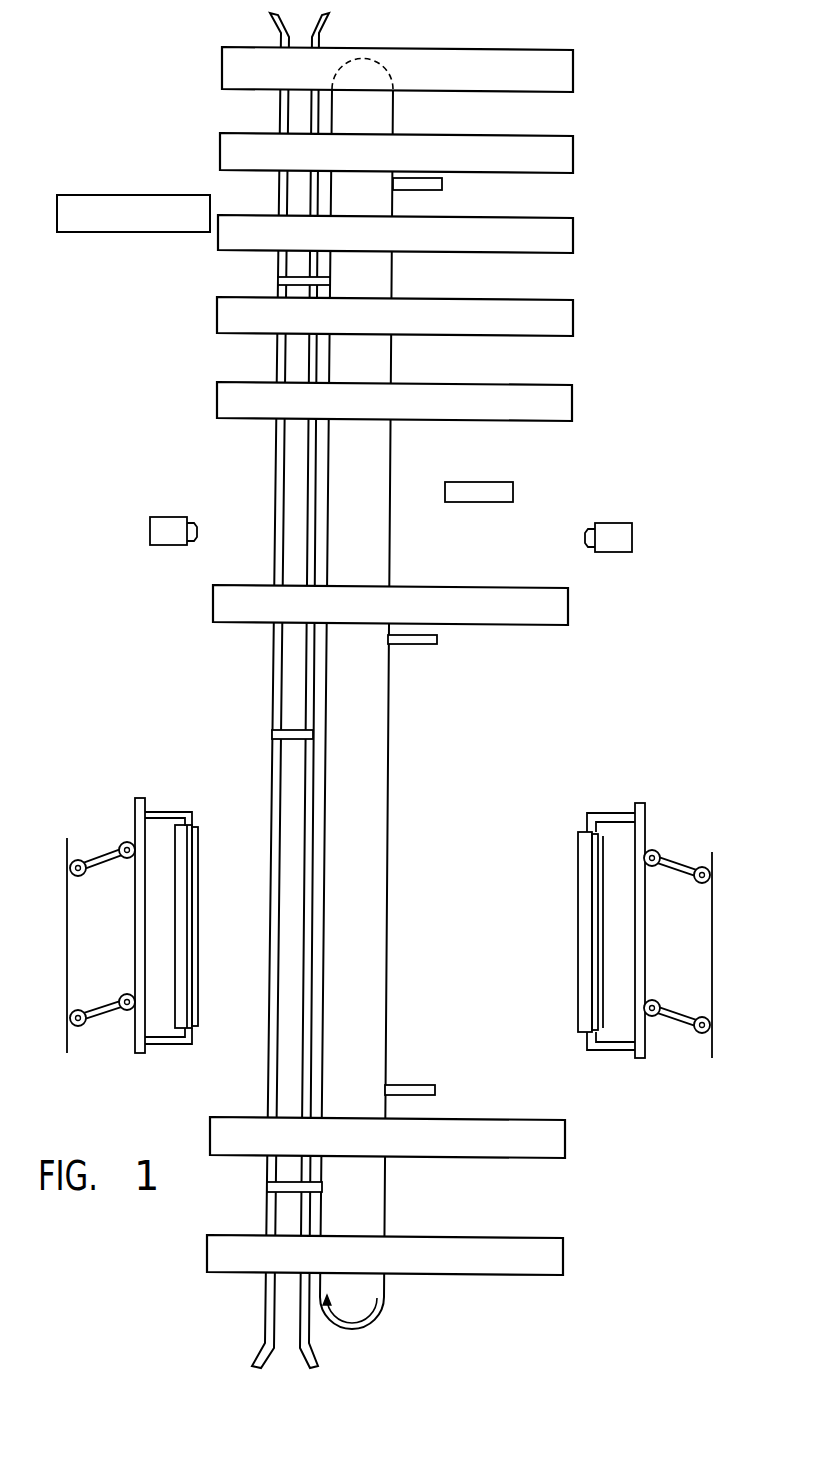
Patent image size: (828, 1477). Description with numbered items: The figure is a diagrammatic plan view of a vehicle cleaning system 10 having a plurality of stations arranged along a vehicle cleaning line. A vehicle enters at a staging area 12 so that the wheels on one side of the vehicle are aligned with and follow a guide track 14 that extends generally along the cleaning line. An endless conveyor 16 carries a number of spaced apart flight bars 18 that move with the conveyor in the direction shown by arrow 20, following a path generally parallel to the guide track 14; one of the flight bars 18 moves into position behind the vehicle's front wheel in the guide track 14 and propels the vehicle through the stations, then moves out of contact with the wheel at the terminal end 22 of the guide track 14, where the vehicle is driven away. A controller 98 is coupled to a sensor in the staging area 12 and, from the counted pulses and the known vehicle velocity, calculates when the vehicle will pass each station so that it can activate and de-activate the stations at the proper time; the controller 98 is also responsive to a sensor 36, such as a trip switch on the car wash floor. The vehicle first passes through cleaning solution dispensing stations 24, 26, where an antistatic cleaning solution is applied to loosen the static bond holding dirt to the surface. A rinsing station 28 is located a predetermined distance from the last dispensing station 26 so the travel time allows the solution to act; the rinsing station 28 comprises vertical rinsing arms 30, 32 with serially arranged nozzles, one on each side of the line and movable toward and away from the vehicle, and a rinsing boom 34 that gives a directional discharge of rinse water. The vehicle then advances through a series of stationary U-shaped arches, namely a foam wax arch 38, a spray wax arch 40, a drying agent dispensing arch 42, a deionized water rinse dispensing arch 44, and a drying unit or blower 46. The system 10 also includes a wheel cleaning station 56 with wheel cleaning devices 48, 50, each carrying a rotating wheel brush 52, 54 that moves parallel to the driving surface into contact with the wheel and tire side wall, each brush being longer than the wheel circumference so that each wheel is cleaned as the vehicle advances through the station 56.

The vehicle cleaning system 10 is at (712, 205).
The staging area 12 is at (477, 1333).
The guide track 14 is at (282, 1302).
The endless conveyor 16 is at (385, 1192).
The flight bars 18 is at (442, 184).
The arrow 20 is at (363, 1330).
The terminal end 22 is at (298, 23).
The cleaning solution dispensing station 24 is at (563, 1254).
The cleaning solution dispensing station 26 is at (565, 1138).
The rinsing station 28 is at (183, 596).
The rinsing arm 30 is at (163, 517).
The rinsing arm 32 is at (611, 523).
The rinsing boom 34 is at (568, 590).
The sensor 36 is at (497, 482).
The foam wax arch 38 is at (572, 388).
The spray wax arch 40 is at (573, 312).
The drying agent dispensing arch 42 is at (573, 232).
The deionized water rinse dispensing arch 44 is at (573, 151).
The drying unit or blower 46 is at (573, 68).
The wheel cleaning device 48 is at (100, 828).
The wheel cleaning device 50 is at (668, 813).
The rotating wheel brush 52 is at (198, 850).
The rotating wheel brush 54 is at (578, 850).
The wheel cleaning station 56 is at (195, 727).
The controller 98 is at (143, 194).